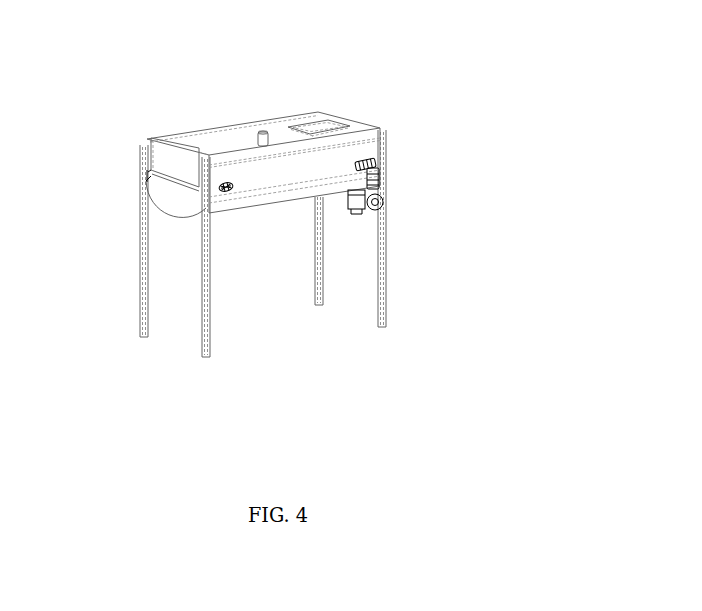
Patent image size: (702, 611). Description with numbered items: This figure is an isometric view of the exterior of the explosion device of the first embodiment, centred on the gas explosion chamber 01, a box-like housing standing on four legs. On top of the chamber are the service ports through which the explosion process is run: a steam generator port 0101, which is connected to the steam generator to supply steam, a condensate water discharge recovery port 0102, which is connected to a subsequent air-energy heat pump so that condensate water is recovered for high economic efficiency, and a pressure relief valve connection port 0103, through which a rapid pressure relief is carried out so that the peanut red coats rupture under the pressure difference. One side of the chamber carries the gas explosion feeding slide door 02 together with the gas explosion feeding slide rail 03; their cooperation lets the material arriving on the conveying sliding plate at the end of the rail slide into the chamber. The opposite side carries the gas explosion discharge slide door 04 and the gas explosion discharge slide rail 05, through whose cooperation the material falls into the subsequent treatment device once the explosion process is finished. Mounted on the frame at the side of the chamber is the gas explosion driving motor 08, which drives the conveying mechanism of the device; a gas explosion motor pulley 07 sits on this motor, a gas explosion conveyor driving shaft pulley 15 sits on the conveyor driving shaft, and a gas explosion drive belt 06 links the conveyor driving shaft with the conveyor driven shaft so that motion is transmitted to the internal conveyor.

The gas explosion chamber 01 is at (231, 132).
The steam generator port 0101 is at (265, 130).
The condensate water discharge recovery port 0102 is at (280, 207).
The pressure relief valve connection port 0103 is at (243, 211).
The gas explosion feeding slide door 02 is at (323, 121).
The gas explosion feeding slide rail 03 is at (347, 122).
The gas explosion discharge slide door 04 is at (181, 168).
The gas explosion discharge slide rail 05 is at (147, 179).
The gas explosion drive belt 06 is at (381, 187).
The gas explosion motor pulley 07 is at (382, 209).
The gas explosion driving motor 08 is at (356, 208).
The gas explosion conveyor driving shaft pulley 15 is at (377, 167).